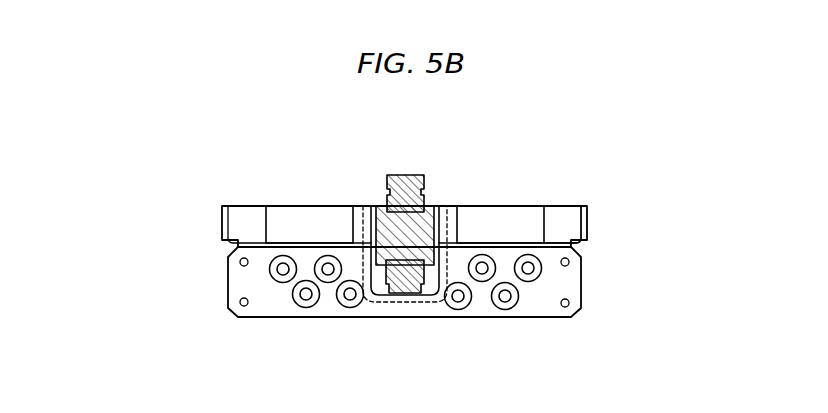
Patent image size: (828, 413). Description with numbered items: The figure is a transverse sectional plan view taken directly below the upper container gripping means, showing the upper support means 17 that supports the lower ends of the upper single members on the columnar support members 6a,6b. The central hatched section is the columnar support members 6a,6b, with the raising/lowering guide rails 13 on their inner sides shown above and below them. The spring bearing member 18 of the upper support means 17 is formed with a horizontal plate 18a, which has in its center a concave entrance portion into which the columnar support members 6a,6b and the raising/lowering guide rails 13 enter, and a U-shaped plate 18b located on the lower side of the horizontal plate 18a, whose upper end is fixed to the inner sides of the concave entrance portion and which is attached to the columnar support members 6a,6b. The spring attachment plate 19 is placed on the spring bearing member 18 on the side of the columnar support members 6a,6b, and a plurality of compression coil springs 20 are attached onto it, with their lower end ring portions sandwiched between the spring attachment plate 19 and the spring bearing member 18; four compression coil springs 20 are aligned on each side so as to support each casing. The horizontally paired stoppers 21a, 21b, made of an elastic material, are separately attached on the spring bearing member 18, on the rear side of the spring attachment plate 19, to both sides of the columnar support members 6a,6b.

The columnar support members 6a,6b is at (395, 232).
The raising/lowering guide rails 13 is at (398, 283).
The upper support means 17 is at (282, 302).
The spring bearing member 18 is at (226, 254).
The horizontal plate 18a is at (562, 218).
The U-shaped plate 18b is at (420, 303).
The spring attachment plate 19 is at (542, 308).
The compression coil springs 20 is at (328, 277).
The stopper 21a is at (503, 223).
The stopper 21b is at (288, 222).